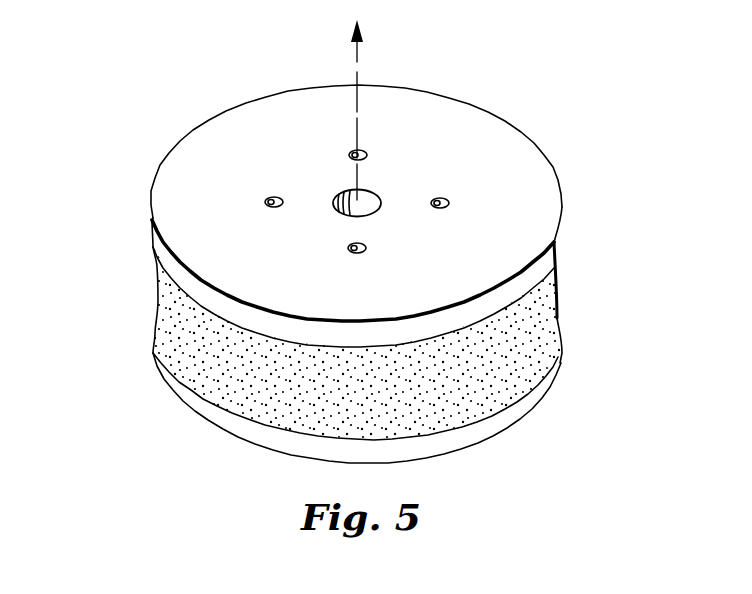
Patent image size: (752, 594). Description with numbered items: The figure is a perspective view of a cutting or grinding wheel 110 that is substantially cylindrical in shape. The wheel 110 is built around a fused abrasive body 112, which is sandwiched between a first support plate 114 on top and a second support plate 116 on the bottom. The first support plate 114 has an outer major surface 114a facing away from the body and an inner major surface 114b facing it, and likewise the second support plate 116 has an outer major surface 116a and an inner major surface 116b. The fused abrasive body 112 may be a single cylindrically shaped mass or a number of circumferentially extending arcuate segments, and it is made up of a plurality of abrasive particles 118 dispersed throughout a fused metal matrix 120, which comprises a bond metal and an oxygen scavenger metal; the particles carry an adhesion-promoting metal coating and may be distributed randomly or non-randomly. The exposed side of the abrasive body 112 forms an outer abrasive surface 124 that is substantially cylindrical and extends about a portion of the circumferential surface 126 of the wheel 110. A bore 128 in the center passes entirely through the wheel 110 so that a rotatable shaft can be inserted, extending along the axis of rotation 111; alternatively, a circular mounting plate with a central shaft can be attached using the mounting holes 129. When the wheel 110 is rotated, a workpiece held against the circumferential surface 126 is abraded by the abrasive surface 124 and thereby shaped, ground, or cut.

The cutting or grinding wheel 110 is at (514, 78).
The axis of rotation 111 is at (362, 76).
The fused abrasive body 112 is at (229, 405).
The first support plate 114 is at (541, 151).
The outer major surface of first support plate 114a is at (170, 200).
The inner major surface of first support plate 114b is at (193, 298).
The second support plate 116 is at (551, 399).
The outer major surface of second support plate 116a is at (508, 429).
The inner major surface of second support plate 116b is at (481, 410).
The abrasive particles 118 is at (207, 383).
The fused metal matrix 120 is at (285, 420).
The outer abrasive surface 124 is at (556, 292).
The circumferential surface 126 is at (561, 262).
The bore 128 is at (368, 198).
The mounting holes 129 is at (432, 203).